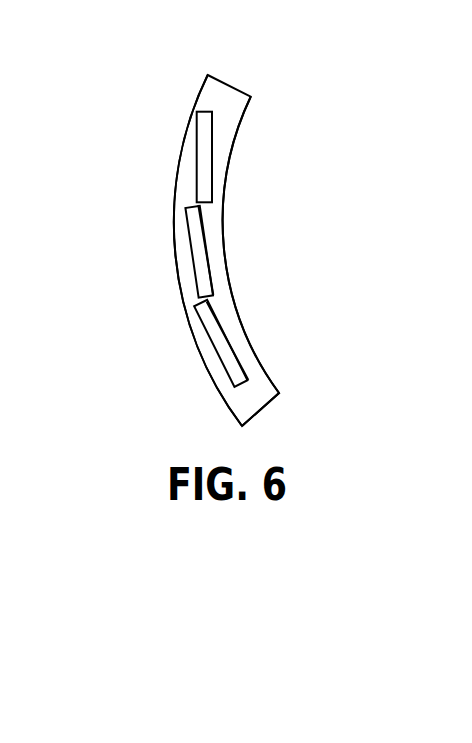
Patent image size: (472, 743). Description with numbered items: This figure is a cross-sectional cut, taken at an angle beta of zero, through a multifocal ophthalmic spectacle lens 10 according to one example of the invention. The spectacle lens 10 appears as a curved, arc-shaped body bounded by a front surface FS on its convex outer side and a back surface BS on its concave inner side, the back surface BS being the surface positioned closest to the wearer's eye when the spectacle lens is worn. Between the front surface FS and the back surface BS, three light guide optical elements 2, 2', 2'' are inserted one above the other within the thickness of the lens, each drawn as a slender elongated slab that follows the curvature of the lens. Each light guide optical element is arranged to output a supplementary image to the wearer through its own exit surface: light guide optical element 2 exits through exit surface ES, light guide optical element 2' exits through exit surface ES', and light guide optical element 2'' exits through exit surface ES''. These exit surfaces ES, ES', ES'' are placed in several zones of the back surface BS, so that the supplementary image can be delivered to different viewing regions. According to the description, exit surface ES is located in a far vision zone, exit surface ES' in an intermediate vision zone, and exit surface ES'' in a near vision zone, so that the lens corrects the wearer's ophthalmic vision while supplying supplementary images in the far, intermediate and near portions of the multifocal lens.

The spectacle lens 10 is at (168, 86).
The light guide optical element 2 is at (172, 157).
The light guide optical element 2' is at (166, 250).
The light guide optical element 2'' is at (184, 343).
The exit surface ES is at (266, 141).
The exit surface ES' is at (254, 250).
The exit surface ES'' is at (268, 336).
The front surface FS is at (200, 360).
The back surface BS is at (279, 391).